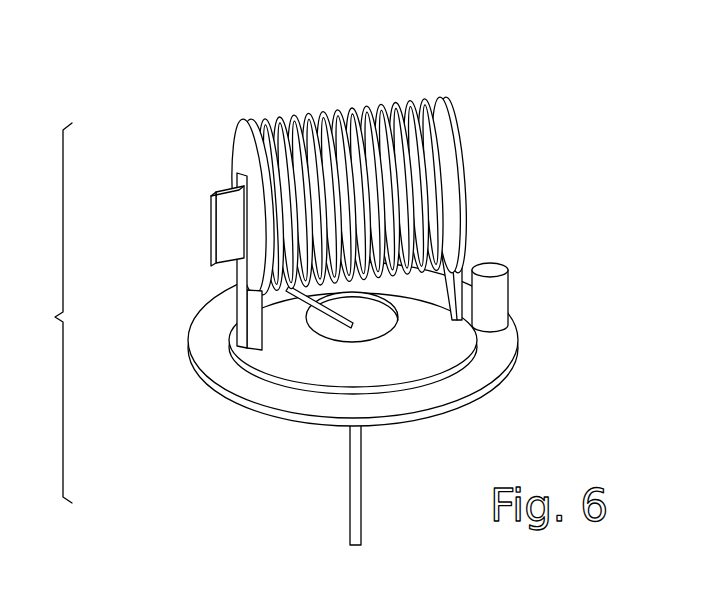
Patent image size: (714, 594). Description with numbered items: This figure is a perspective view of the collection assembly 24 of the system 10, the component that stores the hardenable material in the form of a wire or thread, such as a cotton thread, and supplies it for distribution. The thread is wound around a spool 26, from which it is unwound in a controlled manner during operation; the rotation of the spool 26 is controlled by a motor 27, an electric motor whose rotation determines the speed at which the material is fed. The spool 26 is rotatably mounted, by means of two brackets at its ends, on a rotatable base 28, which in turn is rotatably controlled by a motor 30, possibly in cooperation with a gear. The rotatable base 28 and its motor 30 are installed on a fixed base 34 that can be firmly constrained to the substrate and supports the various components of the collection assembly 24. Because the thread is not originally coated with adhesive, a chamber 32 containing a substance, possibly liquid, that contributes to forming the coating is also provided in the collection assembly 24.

The system 10 is at (474, 82).
The collection assembly 24 is at (46, 313).
The spool 26 is at (243, 150).
The motor 27 is at (230, 236).
The rotatable base 28 is at (432, 345).
The motor 30 is at (487, 268).
The chamber 32 is at (378, 322).
The fixed base 34 is at (292, 402).